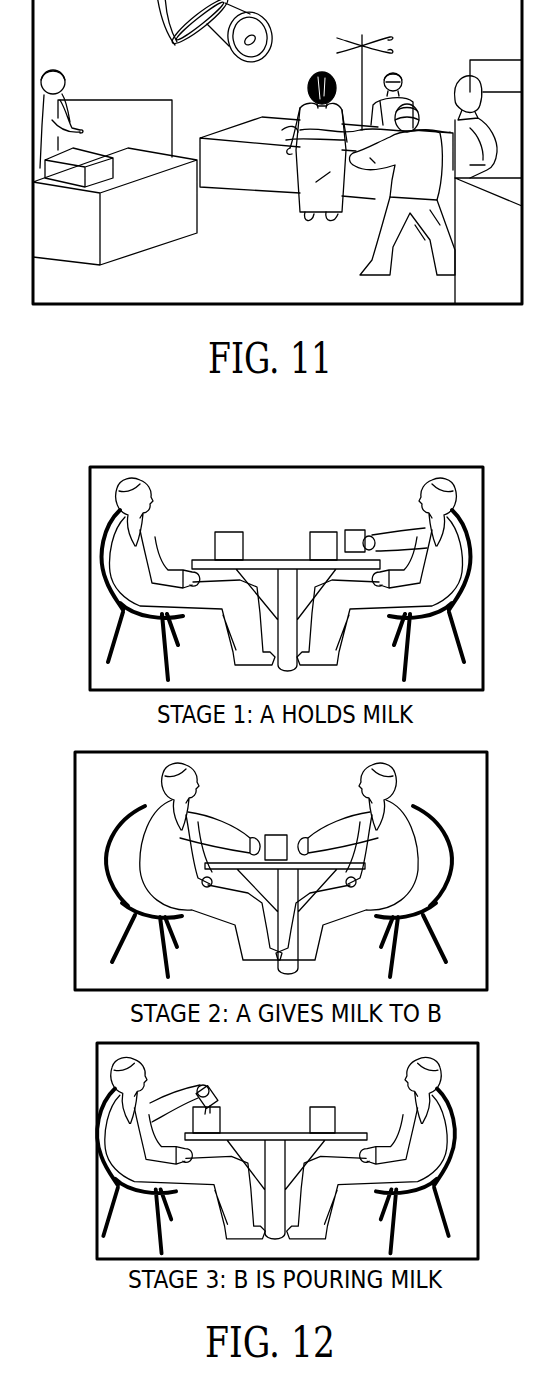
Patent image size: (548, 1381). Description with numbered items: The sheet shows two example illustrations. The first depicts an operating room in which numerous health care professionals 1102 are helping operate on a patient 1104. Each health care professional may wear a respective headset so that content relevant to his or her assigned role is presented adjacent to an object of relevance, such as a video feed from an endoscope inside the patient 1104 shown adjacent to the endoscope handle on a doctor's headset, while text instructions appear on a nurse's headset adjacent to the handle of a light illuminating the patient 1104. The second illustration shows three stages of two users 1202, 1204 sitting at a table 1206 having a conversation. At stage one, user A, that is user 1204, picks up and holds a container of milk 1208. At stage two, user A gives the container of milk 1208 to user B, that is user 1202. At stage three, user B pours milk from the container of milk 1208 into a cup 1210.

In FIG. 11, the health care professionals 1102 is at (67, 75).
In FIG. 11, the patient 1104 is at (355, 152).
In FIG. 12, the user B 1202 is at (151, 490).
In FIG. 12, the user A 1204 is at (422, 515).
In FIG. 12, the table 1206 is at (263, 558).
In FIG. 12, the container of milk 1208 is at (346, 532).
In FIG. 12, the cup 1210 is at (105, 1093).